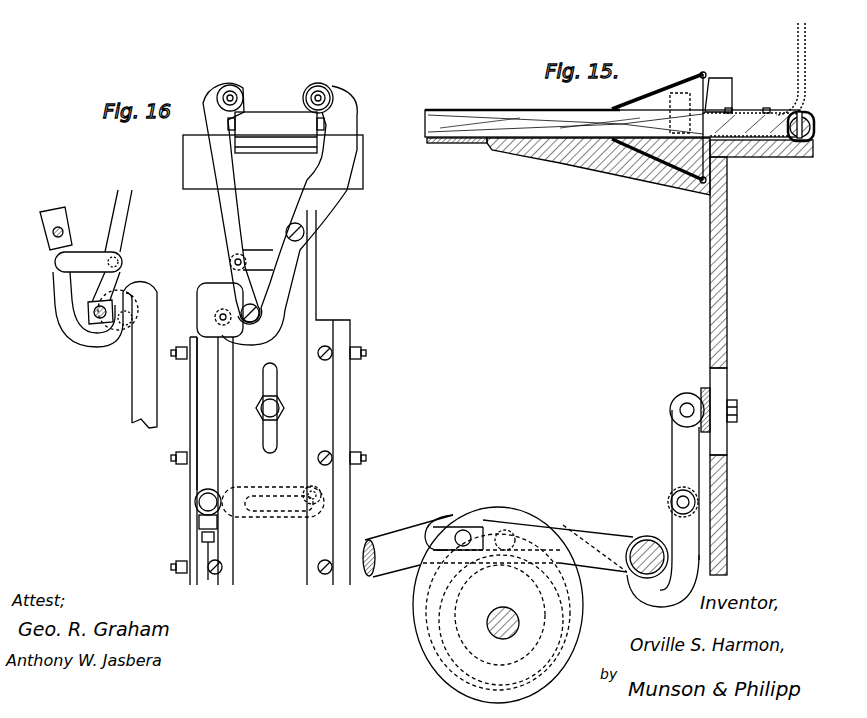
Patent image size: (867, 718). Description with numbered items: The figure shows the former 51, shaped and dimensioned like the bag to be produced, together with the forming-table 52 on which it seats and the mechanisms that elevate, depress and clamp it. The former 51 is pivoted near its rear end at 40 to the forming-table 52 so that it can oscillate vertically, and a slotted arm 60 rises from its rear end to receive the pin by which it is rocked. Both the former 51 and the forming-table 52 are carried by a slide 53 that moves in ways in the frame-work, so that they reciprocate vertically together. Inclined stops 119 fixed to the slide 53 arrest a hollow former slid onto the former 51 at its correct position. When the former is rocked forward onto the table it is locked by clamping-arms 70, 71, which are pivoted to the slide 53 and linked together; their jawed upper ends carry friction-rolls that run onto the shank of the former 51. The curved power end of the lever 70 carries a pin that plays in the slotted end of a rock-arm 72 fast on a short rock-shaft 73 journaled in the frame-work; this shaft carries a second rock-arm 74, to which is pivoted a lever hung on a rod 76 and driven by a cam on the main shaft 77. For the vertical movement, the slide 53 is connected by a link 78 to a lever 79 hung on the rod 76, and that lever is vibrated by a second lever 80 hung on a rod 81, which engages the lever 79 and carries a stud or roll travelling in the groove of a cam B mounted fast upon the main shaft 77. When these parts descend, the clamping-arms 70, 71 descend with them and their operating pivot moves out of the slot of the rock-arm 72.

In FIG. 16, the former 51 is at (276, 132).
In FIG. 15, the former 51 is at (427, 122).
In FIG. 15, the forming-table 52 is at (470, 144).
In FIG. 16, the slide 53 is at (276, 408).
In FIG. 15, the slide 53 is at (724, 366).
In FIG. 15, the slotted arm 60 is at (805, 45).
In FIG. 15, the pivot 40 is at (809, 116).
In FIG. 15, the inclined stops 119 is at (718, 95).
In FIG. 16, the clamping-arm 70 is at (47, 208).
In FIG. 16, the clamping-arm 71 is at (124, 229).
In FIG. 16, the rock-arm 72 is at (172, 391).
In FIG. 16, the rock-shaft 73 is at (208, 534).
In FIG. 16, the rock-arm 74 is at (288, 511).
In FIG. 15, the rod 76 is at (439, 546).
In FIG. 15, the main shaft 77 is at (506, 612).
In FIG. 15, the link 78 is at (672, 453).
In FIG. 15, the lever 79 is at (663, 581).
In FIG. 15, the lever 80 is at (528, 546).
In FIG. 15, the rod 81 is at (647, 541).
In FIG. 15, the cam B is at (432, 646).